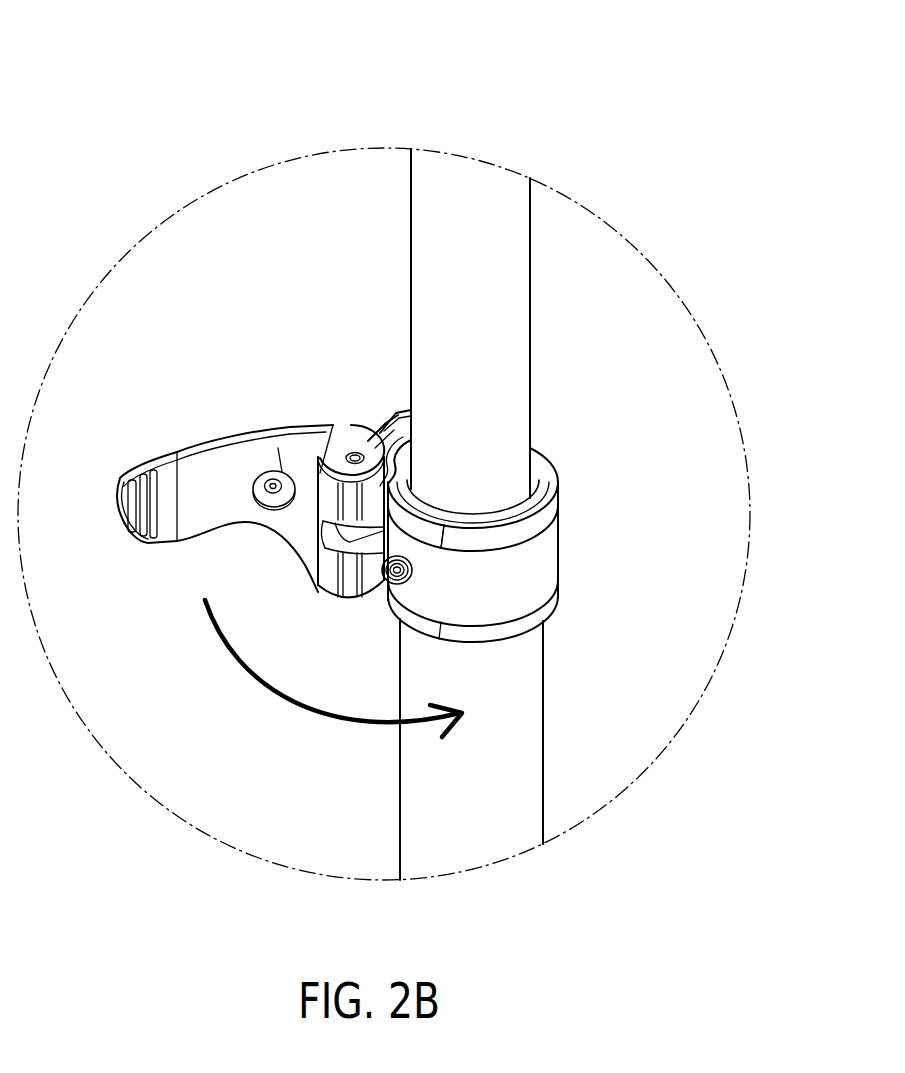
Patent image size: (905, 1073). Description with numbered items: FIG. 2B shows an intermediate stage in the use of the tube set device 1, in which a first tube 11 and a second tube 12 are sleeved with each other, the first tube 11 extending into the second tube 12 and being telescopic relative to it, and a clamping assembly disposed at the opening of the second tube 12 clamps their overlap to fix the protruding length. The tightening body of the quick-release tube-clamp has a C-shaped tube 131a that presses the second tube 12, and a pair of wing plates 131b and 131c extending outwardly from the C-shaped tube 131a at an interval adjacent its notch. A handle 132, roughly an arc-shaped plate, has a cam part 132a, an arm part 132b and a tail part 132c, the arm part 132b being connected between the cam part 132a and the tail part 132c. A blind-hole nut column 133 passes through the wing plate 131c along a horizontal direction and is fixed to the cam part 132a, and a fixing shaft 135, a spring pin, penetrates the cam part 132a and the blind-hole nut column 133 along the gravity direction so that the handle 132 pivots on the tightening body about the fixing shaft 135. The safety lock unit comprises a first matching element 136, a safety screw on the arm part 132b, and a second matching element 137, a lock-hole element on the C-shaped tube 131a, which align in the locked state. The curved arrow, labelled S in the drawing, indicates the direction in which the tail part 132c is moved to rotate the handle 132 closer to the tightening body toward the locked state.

The tube set device 1 is at (483, 97).
The first tube 11 is at (518, 360).
The second tube 12 is at (523, 700).
The C-shaped tube 131a is at (477, 603).
The wing plate 131b is at (403, 412).
The wing plate 131c is at (373, 436).
The handle 132 is at (287, 353).
The cam part 132a is at (307, 443).
The arm part 132b is at (208, 442).
The tail part 132c is at (133, 468).
The blind-hole nut column 133 is at (347, 534).
The fixing shaft 135 is at (355, 455).
The first matching element 136 is at (266, 499).
The second matching element 137 is at (392, 585).
The gap S is at (512, 578).